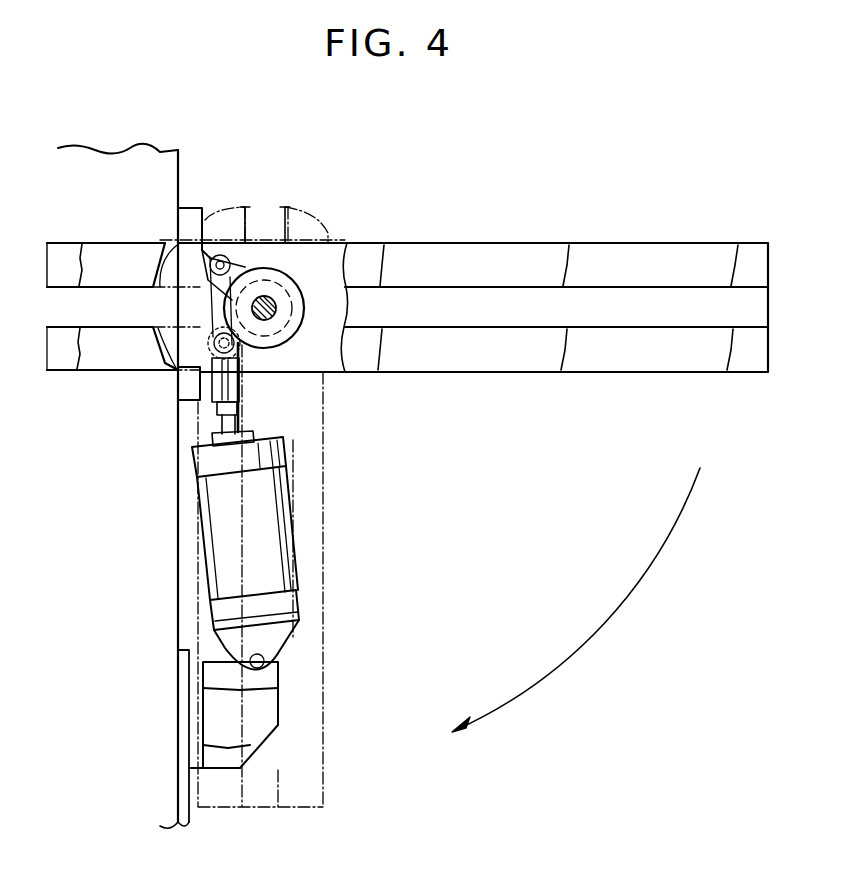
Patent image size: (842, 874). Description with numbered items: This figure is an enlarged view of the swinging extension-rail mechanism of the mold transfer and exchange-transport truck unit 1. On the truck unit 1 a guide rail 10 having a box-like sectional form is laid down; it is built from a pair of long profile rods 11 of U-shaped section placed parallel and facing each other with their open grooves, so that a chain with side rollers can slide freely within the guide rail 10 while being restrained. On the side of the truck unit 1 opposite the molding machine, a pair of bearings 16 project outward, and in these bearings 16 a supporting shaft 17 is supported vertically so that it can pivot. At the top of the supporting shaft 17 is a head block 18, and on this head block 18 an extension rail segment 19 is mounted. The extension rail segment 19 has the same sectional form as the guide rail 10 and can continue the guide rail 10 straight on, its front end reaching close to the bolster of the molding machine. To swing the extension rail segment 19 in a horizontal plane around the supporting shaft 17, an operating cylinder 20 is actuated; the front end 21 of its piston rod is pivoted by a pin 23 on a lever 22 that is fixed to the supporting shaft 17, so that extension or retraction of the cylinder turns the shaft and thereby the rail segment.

The mold transfer and exchange-transport truck unit 1 is at (183, 186).
The guide rail 10 is at (128, 371).
The profile rod 11 is at (108, 242).
The bearing 16 is at (207, 220).
The supporting shaft 17 is at (272, 300).
The head block 18 is at (283, 262).
The extension rail segment 19 is at (466, 242).
The operating cylinder 20 is at (284, 523).
The front end of the piston rod 21 is at (255, 385).
The lever 22 is at (246, 352).
The pin 23 is at (240, 353).